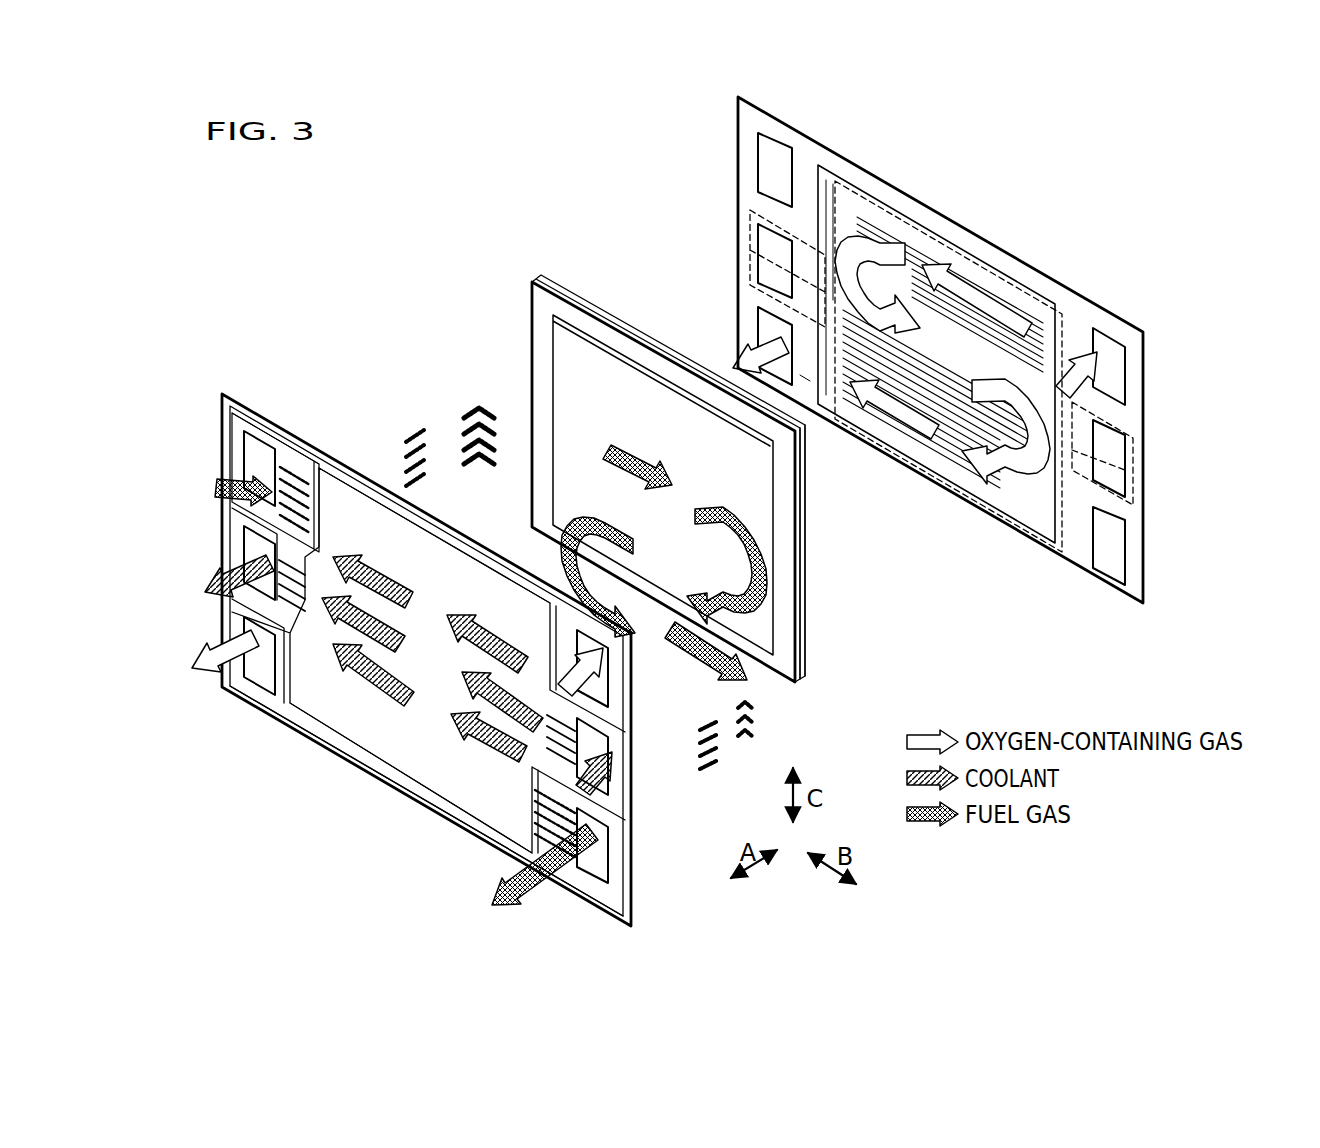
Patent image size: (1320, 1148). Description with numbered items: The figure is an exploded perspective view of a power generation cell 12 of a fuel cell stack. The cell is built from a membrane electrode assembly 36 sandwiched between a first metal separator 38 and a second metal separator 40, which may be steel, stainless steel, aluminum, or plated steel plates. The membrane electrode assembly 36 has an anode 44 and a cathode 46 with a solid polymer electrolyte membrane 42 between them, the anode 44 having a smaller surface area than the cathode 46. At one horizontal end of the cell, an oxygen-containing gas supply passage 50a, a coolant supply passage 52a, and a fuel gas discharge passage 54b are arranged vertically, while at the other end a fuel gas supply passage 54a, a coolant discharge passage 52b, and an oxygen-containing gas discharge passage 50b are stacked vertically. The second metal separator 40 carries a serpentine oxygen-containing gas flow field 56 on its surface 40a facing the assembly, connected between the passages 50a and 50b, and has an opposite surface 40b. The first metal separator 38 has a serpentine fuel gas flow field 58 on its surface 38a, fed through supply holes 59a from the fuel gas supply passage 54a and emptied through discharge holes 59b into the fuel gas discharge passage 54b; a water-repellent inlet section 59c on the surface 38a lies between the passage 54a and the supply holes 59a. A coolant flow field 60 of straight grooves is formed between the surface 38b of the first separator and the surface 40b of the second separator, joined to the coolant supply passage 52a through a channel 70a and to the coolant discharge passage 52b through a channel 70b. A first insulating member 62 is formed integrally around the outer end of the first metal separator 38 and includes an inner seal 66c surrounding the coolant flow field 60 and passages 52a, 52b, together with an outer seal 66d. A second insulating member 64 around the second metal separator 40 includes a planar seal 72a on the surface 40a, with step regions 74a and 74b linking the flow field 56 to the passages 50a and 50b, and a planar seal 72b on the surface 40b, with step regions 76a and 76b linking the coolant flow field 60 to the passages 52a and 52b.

The power generation cell 12 is at (339, 266).
The membrane electrode assembly 36 is at (534, 278).
The first metal separator 38 is at (220, 390).
The surface of the first metal separator 38a is at (497, 556).
The surface of the first metal separator 38b is at (414, 796).
The second metal separator 40 is at (733, 112).
The surface of the second metal separator 40a is at (1080, 578).
The surface of the second metal separator 40b is at (1115, 598).
The solid polymer electrolyte membrane 42 is at (798, 500).
The anode 44 is at (790, 472).
The cathode 46 is at (806, 528).
The oxygen-containing gas supply passage 50a is at (600, 678).
The oxygen-containing gas discharge passage 50b is at (256, 636).
The coolant supply passage 52a is at (606, 752).
The coolant discharge passage 52b is at (256, 540).
The fuel gas supply passage 54a is at (256, 456).
The fuel gas discharge passage 54b is at (600, 842).
The oxygen-containing gas flow field 56 is at (868, 224).
The fuel gas flow field 58 is at (455, 538).
The supply holes 59a is at (300, 480).
The discharge holes 59b is at (548, 850).
The inlet section 59c is at (284, 462).
The coolant flow field 60 is at (340, 472).
The first insulating member 62 is at (322, 764).
The second insulating member 64 is at (1050, 262).
The inner seal 66c is at (372, 488).
The outer seal 66d is at (430, 512).
The channel 70a is at (580, 716).
The channel 70b is at (285, 590).
The planar seal 72a is at (1128, 536).
The planar seal 72b is at (1134, 566).
The step region 74a is at (1074, 332).
The step region 74b is at (805, 383).
The step region 76a is at (1136, 466).
The step region 76b is at (746, 249).